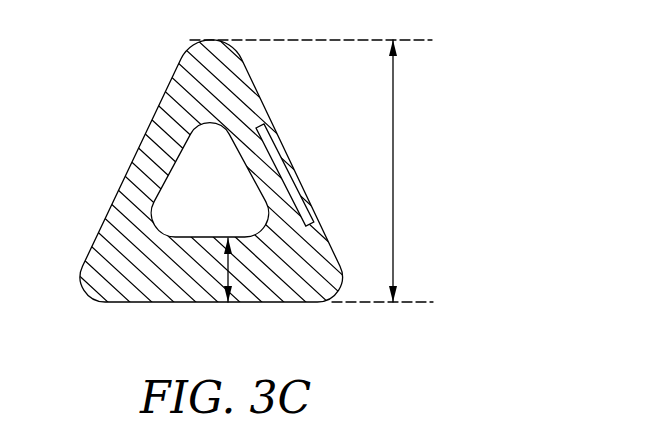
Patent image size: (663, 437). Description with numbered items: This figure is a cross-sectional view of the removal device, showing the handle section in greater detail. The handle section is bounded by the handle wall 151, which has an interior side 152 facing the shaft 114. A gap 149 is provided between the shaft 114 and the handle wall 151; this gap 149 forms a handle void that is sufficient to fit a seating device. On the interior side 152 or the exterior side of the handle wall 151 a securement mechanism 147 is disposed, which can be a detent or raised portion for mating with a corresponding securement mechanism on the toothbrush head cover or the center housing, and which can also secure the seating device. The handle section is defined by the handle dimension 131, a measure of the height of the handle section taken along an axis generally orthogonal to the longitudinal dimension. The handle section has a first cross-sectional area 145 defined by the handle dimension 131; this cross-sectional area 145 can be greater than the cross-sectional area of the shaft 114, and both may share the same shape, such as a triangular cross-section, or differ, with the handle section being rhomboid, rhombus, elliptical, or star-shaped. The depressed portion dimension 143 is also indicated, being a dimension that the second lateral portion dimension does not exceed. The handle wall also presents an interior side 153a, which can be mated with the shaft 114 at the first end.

The handle wall 151 is at (182, 71).
The interior side 152 is at (157, 112).
The interior side 153a is at (164, 146).
The shaft 114 is at (157, 228).
The handle dimension 131 is at (392, 73).
The securement mechanism 147 is at (292, 168).
The gap 149 is at (228, 268).
The depressed portion dimension 143 is at (257, 240).
The first cross-sectional area 145 is at (322, 303).